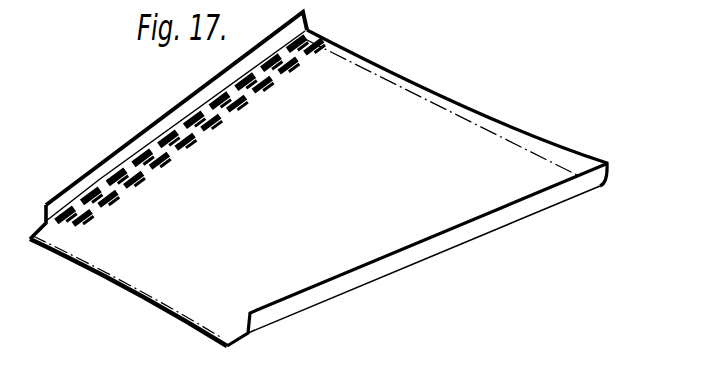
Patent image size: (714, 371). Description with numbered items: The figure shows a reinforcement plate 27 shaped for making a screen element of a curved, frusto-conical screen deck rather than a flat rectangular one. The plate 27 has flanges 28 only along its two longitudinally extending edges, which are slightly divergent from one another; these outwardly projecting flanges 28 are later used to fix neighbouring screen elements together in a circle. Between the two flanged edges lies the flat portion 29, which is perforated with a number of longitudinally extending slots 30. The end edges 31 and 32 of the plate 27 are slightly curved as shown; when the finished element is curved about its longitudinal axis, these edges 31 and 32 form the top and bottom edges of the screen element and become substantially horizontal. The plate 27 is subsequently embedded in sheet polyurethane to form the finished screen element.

The reinforcement plate 27 is at (98, 159).
The flanges 28 is at (160, 117).
The flat portion 29 is at (383, 151).
The longitudinally extending slots 30 is at (306, 67).
The end edge 31 is at (141, 291).
The end edge 32 is at (448, 96).